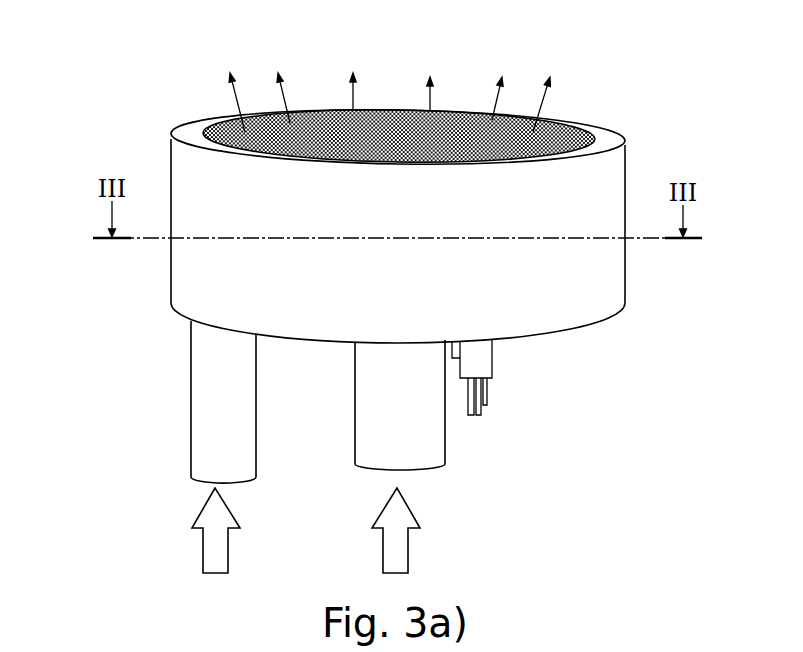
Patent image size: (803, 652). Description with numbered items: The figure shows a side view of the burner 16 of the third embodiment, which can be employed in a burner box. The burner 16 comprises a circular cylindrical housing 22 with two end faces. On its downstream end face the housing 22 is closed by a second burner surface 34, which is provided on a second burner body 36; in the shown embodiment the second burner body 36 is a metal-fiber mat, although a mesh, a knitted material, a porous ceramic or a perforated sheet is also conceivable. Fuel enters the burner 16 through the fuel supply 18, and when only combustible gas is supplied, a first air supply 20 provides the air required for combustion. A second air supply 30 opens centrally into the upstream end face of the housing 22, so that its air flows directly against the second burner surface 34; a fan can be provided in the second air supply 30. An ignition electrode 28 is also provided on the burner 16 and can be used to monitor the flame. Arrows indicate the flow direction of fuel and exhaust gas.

The burner 16 is at (146, 279).
The housing 22 is at (608, 186).
The second burner surface 34 is at (452, 110).
The second burner body 36 is at (399, 136).
The fuel supply 18 is at (212, 443).
The first air supply 20 is at (223, 447).
The second air supply 30 is at (437, 448).
The ignition electrode 28 is at (483, 358).